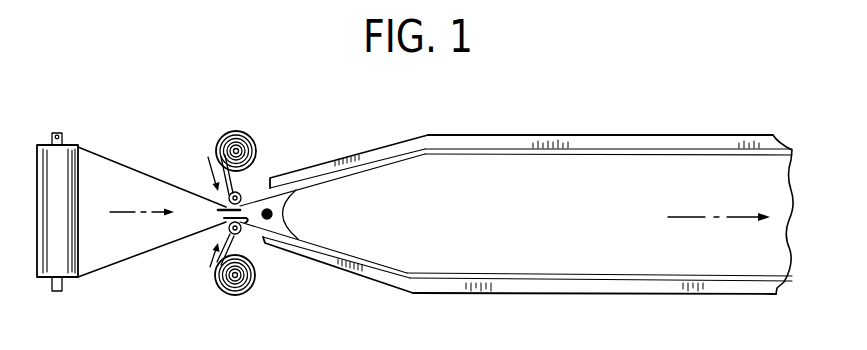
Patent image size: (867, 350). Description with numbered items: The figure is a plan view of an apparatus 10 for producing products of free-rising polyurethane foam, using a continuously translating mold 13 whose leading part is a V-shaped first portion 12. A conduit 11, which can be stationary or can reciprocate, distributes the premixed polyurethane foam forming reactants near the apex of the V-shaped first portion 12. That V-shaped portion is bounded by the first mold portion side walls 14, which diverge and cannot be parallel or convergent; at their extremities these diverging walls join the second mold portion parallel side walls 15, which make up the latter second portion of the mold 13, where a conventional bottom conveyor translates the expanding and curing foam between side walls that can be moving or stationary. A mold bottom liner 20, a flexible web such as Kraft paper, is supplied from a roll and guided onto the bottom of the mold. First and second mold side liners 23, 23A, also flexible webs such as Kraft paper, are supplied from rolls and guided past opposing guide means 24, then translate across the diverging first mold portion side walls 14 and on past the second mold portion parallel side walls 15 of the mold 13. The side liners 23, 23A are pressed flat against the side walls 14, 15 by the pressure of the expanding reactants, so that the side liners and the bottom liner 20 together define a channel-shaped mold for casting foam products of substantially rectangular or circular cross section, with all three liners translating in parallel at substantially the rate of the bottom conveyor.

The apparatus 10 is at (647, 120).
The conduit 11 is at (266, 209).
The V-shaped first portion of mold 12 is at (352, 228).
The continuously translating mold 13 is at (652, 204).
The first mold portion side walls 14 is at (313, 173).
The second mold portion parallel side walls 15 is at (438, 142).
The mold bottom liner 20 is at (118, 196).
The first mold side liner 23 is at (237, 290).
The second mold side liner 23A is at (227, 133).
The guide means 24 is at (217, 214).